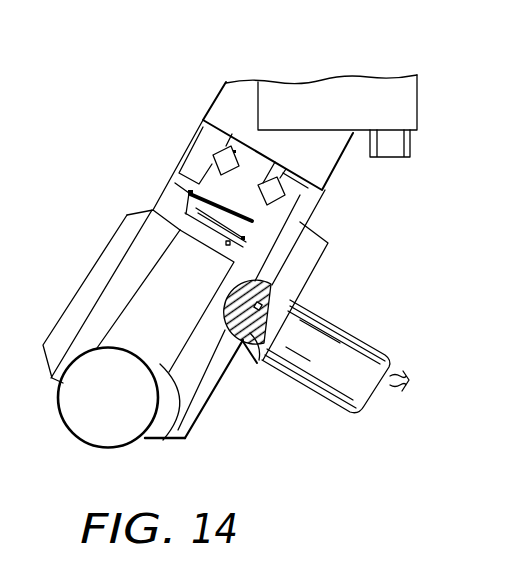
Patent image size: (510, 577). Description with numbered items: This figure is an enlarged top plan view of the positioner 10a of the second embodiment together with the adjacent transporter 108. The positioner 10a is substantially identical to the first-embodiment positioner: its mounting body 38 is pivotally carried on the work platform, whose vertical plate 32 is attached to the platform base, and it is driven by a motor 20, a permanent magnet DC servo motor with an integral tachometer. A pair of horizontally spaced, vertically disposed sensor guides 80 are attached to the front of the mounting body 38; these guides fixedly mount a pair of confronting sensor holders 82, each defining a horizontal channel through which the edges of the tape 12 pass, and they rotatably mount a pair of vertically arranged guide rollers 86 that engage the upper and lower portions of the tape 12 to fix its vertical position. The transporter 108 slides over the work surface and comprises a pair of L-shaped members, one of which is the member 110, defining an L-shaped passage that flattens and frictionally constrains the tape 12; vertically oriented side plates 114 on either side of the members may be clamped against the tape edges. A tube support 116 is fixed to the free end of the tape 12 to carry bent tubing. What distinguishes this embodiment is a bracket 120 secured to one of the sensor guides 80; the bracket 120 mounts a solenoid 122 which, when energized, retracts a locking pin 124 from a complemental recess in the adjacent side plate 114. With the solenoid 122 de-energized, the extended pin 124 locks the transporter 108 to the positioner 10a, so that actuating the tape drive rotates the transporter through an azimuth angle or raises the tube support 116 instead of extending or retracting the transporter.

The positioner 10a is at (300, 82).
The mounting body 38 is at (394, 82).
The tape 12 is at (250, 165).
The sensor holders 82 is at (213, 160).
The sensor guides 80 is at (177, 176).
The motor 20 is at (324, 177).
The vertical plate 32 is at (390, 147).
The guide rollers 86 is at (245, 222).
The bracket 120 is at (302, 287).
The transporter 108 is at (92, 265).
The side plates 114 is at (59, 321).
The solenoid 122 is at (358, 348).
The locking pin 124 is at (256, 363).
The tube support 116 is at (104, 437).
The L-shaped member 110 is at (180, 442).